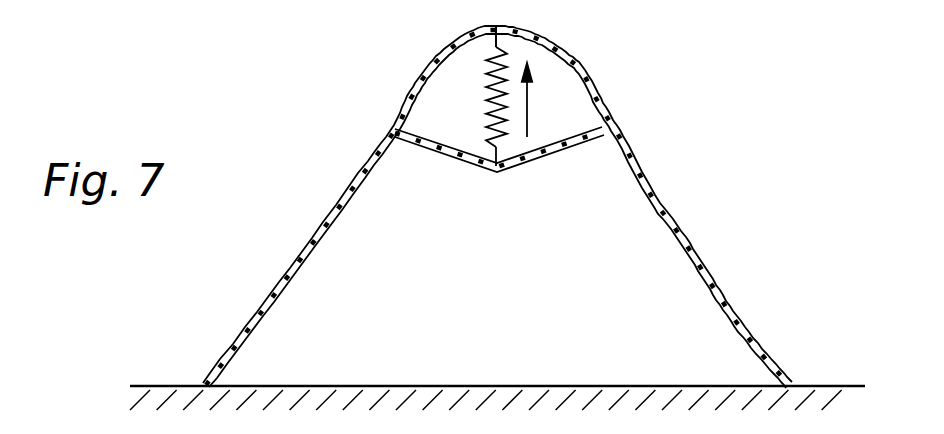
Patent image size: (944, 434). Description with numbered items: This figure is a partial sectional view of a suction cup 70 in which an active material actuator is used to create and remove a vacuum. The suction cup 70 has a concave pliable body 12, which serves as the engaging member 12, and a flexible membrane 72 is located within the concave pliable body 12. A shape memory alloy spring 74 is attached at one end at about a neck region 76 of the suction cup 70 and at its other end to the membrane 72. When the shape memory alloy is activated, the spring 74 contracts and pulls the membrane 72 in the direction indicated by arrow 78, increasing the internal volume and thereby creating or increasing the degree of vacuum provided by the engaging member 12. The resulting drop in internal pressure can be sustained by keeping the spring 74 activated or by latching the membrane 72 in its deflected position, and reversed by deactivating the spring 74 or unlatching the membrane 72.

The concave pliable body 12 is at (306, 258).
The suction cup 70 is at (767, 116).
The flexible membrane 72 is at (543, 158).
The shape memory alloy spring 74 is at (487, 88).
The neck region 76 is at (497, 30).
The arrow 78 is at (527, 105).